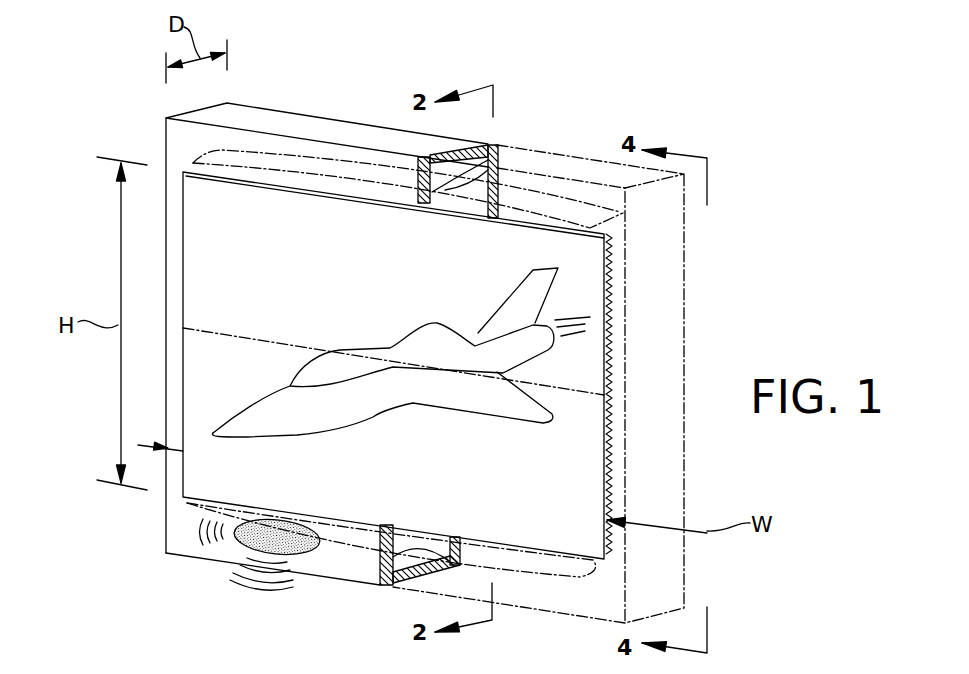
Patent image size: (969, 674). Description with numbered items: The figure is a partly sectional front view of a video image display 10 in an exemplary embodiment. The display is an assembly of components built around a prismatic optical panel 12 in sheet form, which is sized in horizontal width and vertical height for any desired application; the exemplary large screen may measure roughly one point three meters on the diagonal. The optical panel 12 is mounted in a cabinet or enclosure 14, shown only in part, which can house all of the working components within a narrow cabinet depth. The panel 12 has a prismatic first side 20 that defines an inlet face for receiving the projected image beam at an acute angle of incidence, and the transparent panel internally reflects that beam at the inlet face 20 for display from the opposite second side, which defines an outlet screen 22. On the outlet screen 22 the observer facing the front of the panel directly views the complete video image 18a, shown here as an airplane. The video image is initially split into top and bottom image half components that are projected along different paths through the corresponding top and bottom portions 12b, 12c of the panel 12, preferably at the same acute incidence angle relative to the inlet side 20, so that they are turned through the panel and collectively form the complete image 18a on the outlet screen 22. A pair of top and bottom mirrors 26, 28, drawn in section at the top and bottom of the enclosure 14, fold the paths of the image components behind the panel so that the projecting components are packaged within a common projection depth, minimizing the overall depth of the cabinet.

The video image display 10 is at (133, 123).
The prismatic optical panel 12 is at (612, 281).
The top portion of the panel 12b is at (288, 262).
The bottom portion of the panel 12c is at (274, 480).
The cabinet or enclosure 14 is at (293, 113).
The video image 18a is at (300, 433).
The prismatic first side (inlet face) 20 is at (605, 462).
The outlet screen 22 is at (553, 518).
The top mirror 26 is at (498, 164).
The bottom mirror 28 is at (413, 550).